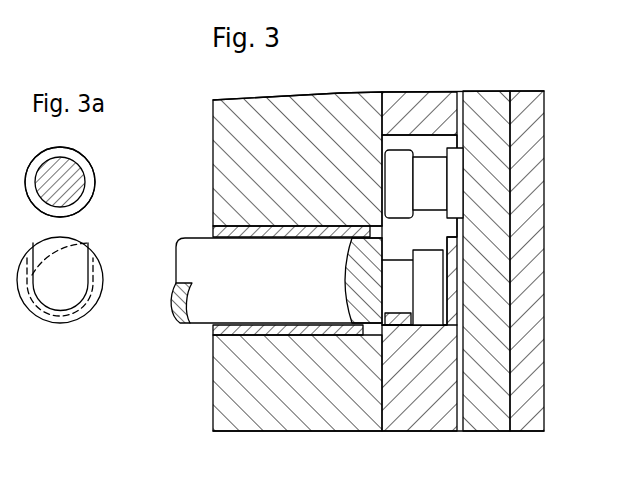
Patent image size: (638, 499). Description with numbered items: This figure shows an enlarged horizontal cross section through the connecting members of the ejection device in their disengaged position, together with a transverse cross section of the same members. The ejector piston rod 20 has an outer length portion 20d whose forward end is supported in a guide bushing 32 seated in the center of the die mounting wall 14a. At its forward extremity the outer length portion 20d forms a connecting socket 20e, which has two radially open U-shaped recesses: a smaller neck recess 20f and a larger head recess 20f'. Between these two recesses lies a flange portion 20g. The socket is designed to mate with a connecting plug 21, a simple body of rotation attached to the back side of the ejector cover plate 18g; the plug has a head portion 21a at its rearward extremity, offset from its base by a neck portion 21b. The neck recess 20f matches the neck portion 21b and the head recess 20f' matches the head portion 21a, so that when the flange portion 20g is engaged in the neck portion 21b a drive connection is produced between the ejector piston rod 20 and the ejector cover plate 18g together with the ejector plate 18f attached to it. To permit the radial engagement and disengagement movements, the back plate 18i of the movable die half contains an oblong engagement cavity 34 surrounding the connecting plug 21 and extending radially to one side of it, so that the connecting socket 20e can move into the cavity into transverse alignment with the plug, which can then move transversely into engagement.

In FIG. 3, the die mounting wall 14a is at (287, 405).
In FIG. 3, the ejector plate 18f is at (533, 417).
In FIG. 3, the ejector cover plate 18g is at (490, 420).
In FIG. 3, the back plate 18i is at (438, 413).
In FIG. 3, the ejector piston rod 20 is at (196, 230).
In FIG. 3, the outer length portion 20d is at (223, 297).
In FIG. 3, the connecting socket 20e is at (415, 335).
In FIG. 3A, the connecting socket 20e is at (62, 334).
In FIG. 3, the neck recess 20f is at (373, 374).
In FIG. 3A, the neck recess 20f is at (86, 276).
In FIG. 3, the head recess 20f' is at (372, 385).
In FIG. 3A, the head recess 20f' is at (84, 276).
In FIG. 3, the flange portion 20g is at (433, 307).
In FIG. 3, the connecting plug 21 is at (433, 145).
In FIG. 3A, the connecting plug 21 is at (97, 207).
In FIG. 3, the head portion 21a is at (404, 170).
In FIG. 3A, the head portion 21a is at (90, 177).
In FIG. 3, the neck portion 21b is at (422, 163).
In FIG. 3A, the neck portion 21b is at (78, 192).
In FIG. 3, the guide bushing 32 is at (307, 233).
In FIG. 3, the engagement cavity 34 is at (430, 230).